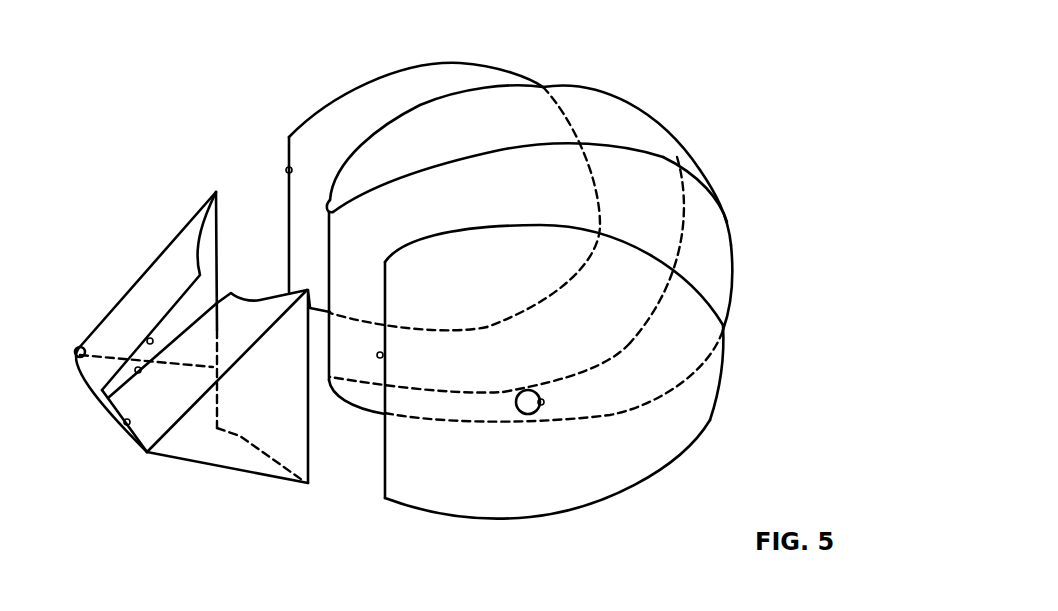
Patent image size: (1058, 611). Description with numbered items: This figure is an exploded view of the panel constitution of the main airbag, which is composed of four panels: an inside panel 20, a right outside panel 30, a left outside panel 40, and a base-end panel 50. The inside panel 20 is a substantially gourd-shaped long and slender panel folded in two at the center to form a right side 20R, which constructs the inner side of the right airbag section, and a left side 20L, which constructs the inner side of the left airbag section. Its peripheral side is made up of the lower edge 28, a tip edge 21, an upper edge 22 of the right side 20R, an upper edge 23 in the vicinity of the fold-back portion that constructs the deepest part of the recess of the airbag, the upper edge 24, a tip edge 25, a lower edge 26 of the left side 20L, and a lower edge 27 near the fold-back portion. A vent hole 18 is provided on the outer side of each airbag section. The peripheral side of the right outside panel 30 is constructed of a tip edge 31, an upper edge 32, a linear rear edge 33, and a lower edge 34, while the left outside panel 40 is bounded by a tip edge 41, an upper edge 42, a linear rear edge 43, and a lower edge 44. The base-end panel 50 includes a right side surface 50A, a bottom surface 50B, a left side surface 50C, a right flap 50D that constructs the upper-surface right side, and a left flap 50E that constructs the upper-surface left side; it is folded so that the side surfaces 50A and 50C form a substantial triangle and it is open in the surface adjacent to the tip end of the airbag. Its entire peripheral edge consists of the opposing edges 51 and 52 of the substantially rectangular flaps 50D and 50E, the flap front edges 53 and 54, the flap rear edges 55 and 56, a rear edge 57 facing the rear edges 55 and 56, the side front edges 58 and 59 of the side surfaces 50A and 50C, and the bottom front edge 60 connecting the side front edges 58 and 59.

The vent hole 18 is at (544, 402).
The inside panel 20 is at (614, 258).
The left side of inside panel 20L is at (600, 103).
The right side of inside panel 20R is at (707, 203).
The tip edge 21 is at (733, 277).
The upper edge of right side 22 is at (473, 170).
The upper edge near fold-back portion 23 is at (348, 203).
The upper edge 24 is at (442, 115).
The tip edge 25 is at (668, 143).
The lower edge of left side 26 is at (467, 393).
The lower edge near fold-back portion 27 is at (342, 396).
The lower edge 28 is at (477, 424).
The right outside panel 30 is at (579, 399).
The tip edge 31 is at (723, 373).
The upper edge 32 is at (527, 224).
The linear rear edge 33 is at (383, 356).
The lower edge 34 is at (470, 519).
The left outside panel 40 is at (443, 176).
The tip edge 41 is at (600, 197).
The upper edge 42 is at (387, 73).
The linear rear edge 43 is at (292, 170).
The lower edge 44 is at (355, 325).
The base-end panel 50 is at (205, 367).
The right side surface 50A is at (257, 465).
The bottom surface 50B is at (125, 440).
The left side surface 50C is at (110, 297).
The right flap 50D is at (234, 356).
The left flap 50E is at (173, 248).
The opposing edge of right flap 51 is at (141, 371).
The opposing edge of left flap 52 is at (148, 341).
The flap front edge 53 is at (263, 298).
The flap front edge 54 is at (212, 246).
The rear edge of right flap 55 is at (130, 422).
The rear edge of left flap 56 is at (78, 347).
The rear edge 57 is at (110, 423).
The side front edge 58 is at (310, 441).
The side front edge 59 is at (217, 190).
The bottom front edge 60 is at (273, 447).